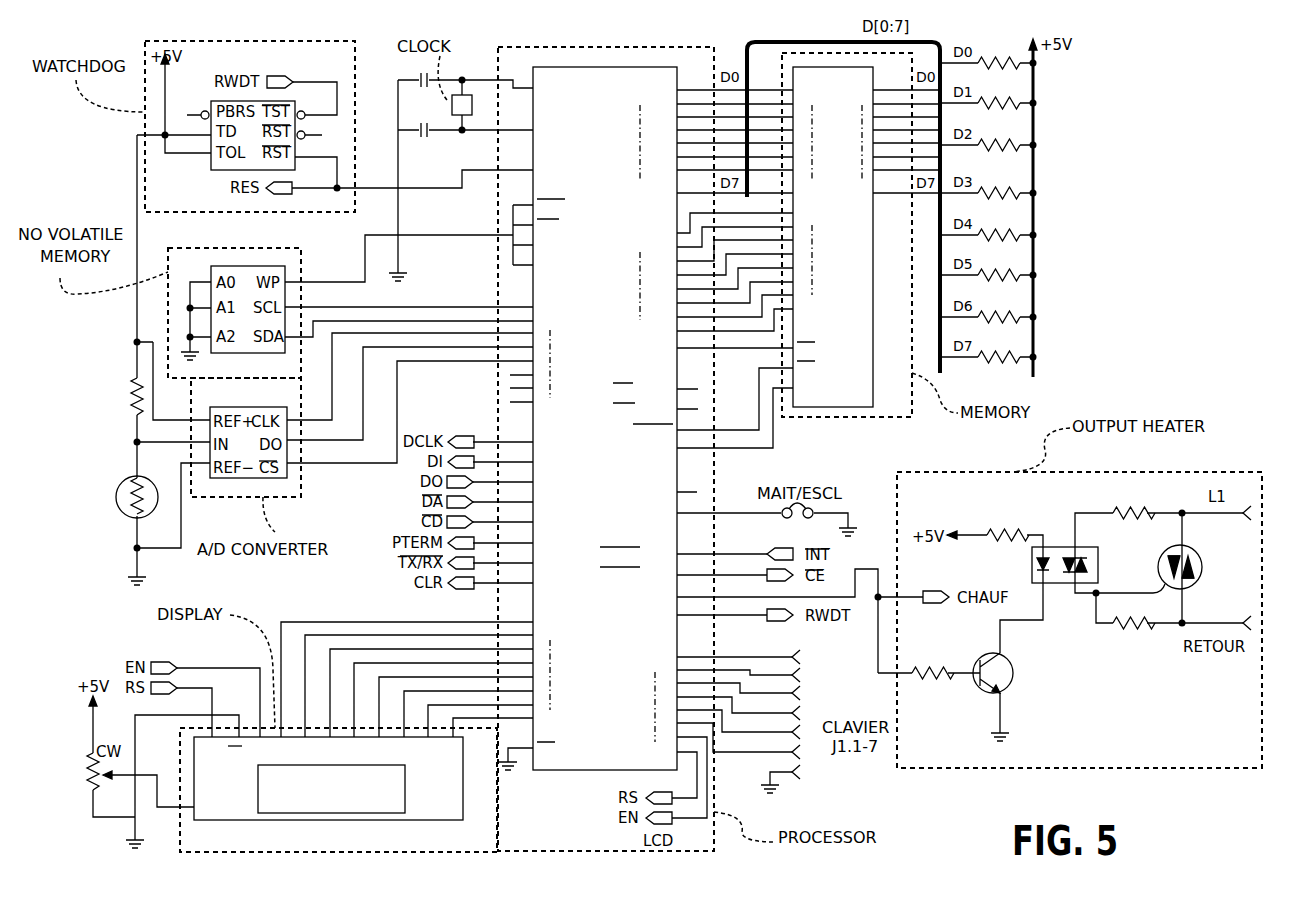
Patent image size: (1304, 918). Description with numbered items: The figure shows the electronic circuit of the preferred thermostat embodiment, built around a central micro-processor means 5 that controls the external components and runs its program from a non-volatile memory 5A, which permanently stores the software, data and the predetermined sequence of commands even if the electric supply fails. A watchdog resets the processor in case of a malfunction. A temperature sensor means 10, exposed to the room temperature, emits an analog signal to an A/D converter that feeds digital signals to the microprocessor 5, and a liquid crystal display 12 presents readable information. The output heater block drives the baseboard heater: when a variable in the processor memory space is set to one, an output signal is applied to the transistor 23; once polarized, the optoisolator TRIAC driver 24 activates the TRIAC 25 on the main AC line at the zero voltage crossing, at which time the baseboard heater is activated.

The central micro-processor means 5 is at (593, 770).
The non-volatile memory 5A is at (865, 371).
The temperature sensor means 10 is at (114, 497).
The liquid crystal display 12 is at (463, 793).
The transistor 23 is at (1013, 676).
The optoisolator TRIAC driver 24 is at (1065, 583).
The TRIAC 25 is at (1203, 557).